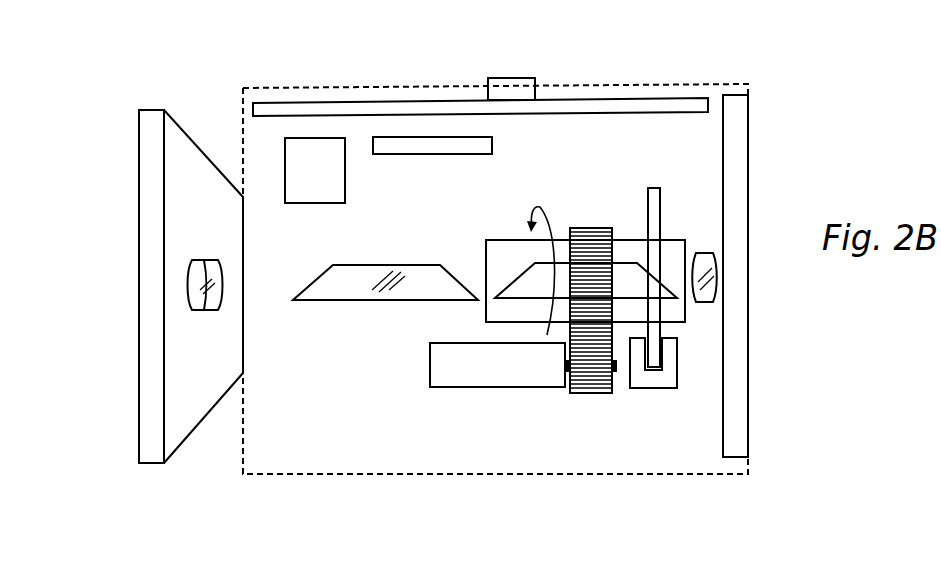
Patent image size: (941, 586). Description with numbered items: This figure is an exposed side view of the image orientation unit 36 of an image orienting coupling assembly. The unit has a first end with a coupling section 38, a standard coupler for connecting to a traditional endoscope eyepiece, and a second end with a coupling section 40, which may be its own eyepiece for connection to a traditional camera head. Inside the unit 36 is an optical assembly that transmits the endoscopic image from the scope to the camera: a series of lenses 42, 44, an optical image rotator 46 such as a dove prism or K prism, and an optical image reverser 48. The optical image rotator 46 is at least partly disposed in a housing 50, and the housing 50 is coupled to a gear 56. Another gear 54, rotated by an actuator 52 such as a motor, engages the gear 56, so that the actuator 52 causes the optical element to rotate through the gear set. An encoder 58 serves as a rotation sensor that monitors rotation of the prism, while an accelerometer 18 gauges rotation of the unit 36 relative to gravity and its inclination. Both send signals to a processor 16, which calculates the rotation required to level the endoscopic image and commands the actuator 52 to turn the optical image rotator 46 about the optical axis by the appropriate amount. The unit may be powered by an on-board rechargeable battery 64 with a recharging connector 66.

The processor 16 is at (445, 152).
The accelerometer 18 is at (328, 199).
The image orientation unit 36 is at (352, 92).
The coupling section 38 is at (725, 387).
The coupling section 40 is at (143, 257).
The lens 42 is at (700, 251).
The lens 44 is at (210, 311).
The optical image rotator 46 is at (522, 282).
The optical image reverser 48 is at (382, 301).
The housing 50 is at (485, 253).
The actuator 52 is at (462, 388).
The gear 54 is at (590, 394).
The gear 56 is at (587, 227).
The encoder 58 is at (653, 193).
The rechargeable battery 64 is at (617, 114).
The recharging connector 66 is at (517, 78).